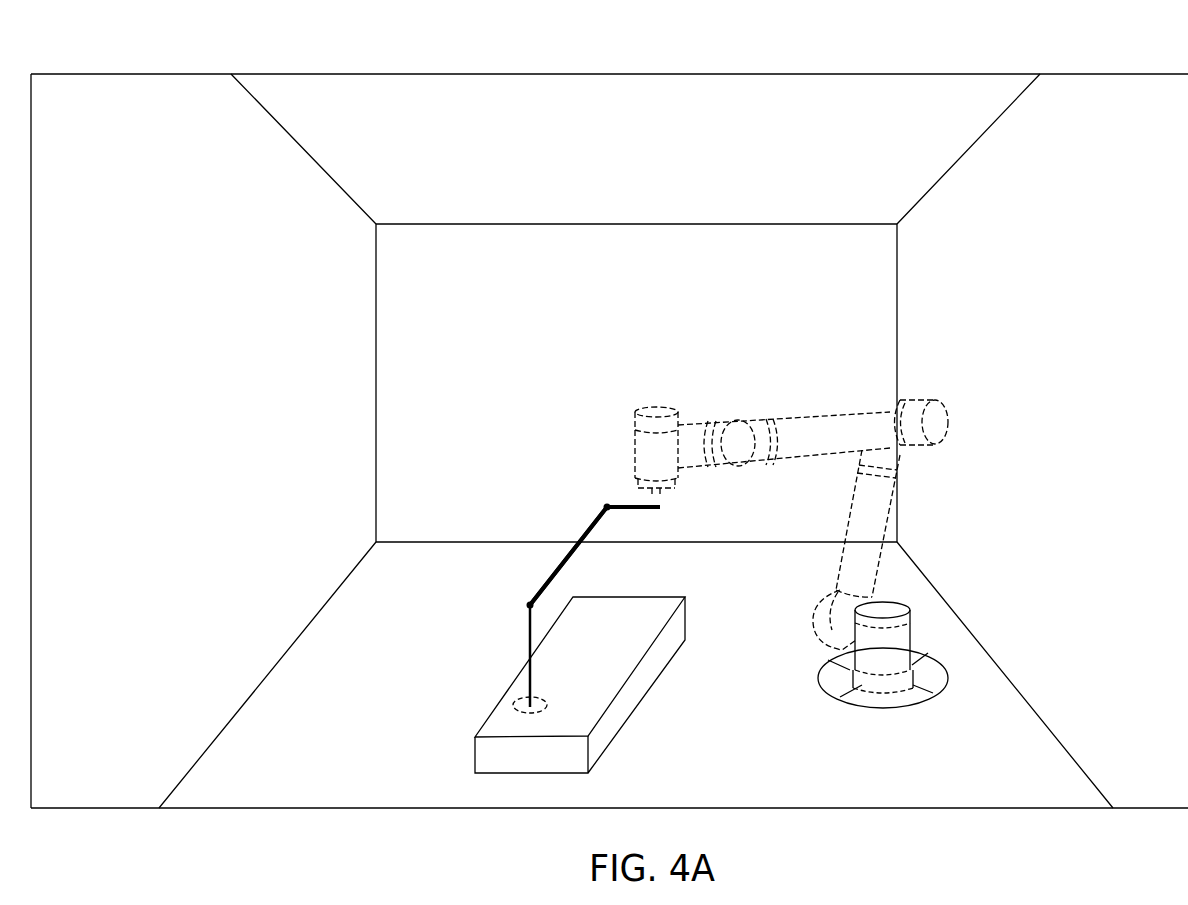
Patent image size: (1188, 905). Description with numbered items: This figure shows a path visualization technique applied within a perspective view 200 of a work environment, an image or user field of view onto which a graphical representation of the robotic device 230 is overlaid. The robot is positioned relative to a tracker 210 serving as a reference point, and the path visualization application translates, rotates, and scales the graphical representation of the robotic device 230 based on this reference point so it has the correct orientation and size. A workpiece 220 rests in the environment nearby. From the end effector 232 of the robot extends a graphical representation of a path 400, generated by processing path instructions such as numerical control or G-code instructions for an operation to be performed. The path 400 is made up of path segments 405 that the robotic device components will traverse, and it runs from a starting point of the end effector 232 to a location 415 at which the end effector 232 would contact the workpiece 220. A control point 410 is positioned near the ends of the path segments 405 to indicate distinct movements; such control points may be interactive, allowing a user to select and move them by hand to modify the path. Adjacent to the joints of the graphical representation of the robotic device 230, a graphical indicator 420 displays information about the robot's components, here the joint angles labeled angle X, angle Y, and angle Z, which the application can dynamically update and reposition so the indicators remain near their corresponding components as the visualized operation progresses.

The perspective view 200 is at (955, 48).
The tracker 210 is at (883, 706).
The workpiece 220 is at (490, 775).
The graphical representation of the robotic device 230 is at (912, 645).
The end effector 232 is at (658, 505).
The graphical representation of the path 400 is at (541, 605).
The path segment 405 is at (560, 567).
The control point 410 is at (524, 604).
The location 415 is at (520, 703).
The graphical indicator 420 is at (801, 340).